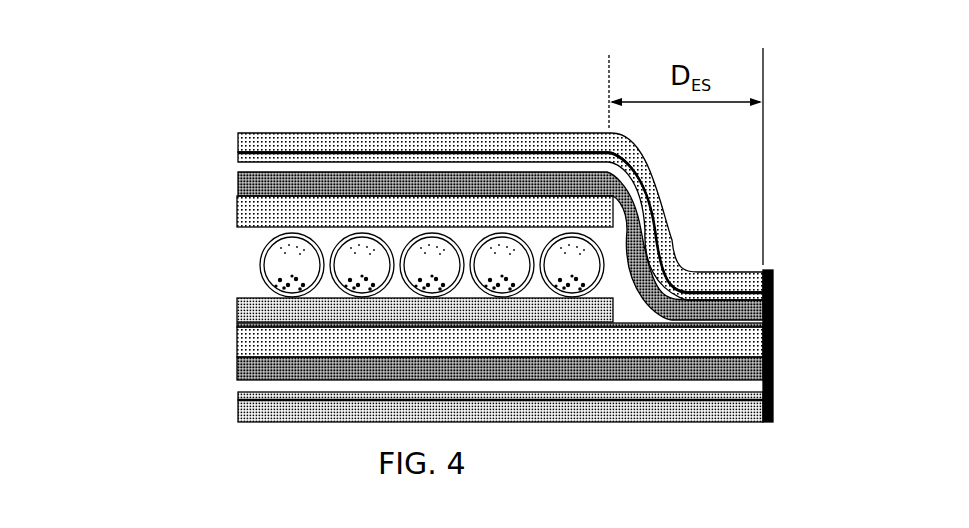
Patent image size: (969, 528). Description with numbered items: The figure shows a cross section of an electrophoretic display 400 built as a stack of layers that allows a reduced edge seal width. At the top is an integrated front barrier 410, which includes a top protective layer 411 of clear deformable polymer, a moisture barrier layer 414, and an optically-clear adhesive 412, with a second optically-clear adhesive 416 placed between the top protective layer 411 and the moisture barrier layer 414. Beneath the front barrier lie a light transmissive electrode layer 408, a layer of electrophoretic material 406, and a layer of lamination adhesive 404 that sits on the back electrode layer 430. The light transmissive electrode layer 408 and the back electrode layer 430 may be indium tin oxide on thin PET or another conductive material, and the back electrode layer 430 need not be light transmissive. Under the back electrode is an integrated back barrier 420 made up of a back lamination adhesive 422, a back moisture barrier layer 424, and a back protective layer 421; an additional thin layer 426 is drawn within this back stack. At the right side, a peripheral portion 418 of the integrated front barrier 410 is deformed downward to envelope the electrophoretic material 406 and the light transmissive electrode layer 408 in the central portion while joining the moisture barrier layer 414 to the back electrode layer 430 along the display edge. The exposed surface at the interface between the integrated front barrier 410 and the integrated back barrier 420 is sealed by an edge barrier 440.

The display 400 is at (340, 72).
The top protective layer 411 is at (273, 142).
The second optically-clear adhesive 416 is at (244, 155).
The moisture barrier layer 414 is at (240, 163).
The optically-clear adhesive 412 is at (250, 185).
The light transmissive electrode layer 408 is at (250, 211).
The layer of electrophoretic material 406 is at (270, 267).
The layer of lamination adhesive 404 is at (247, 313).
The back electrode layer 430 is at (277, 343).
The back lamination adhesive 422 is at (245, 363).
The back moisture barrier layer 424 is at (243, 381).
The adhesive layer 426 is at (245, 398).
The back protective layer 421 is at (313, 412).
The integrated front barrier 410 is at (781, 265).
The integrated back barrier 420 is at (781, 356).
The peripheral portion 418 is at (765, 430).
The edge barrier 440 is at (773, 422).